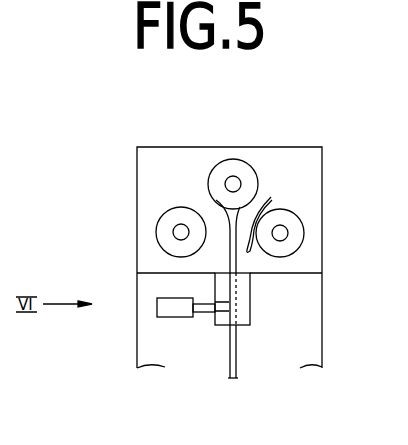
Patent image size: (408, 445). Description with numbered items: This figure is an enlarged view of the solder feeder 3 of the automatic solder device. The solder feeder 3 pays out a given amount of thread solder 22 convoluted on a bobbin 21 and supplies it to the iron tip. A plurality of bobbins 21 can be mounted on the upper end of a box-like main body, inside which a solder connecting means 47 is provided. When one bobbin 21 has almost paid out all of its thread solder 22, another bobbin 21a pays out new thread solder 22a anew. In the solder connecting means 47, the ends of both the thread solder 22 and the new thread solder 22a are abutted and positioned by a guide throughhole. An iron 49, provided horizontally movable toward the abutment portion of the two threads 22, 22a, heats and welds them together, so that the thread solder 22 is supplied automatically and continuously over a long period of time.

The solder feeder 3 is at (283, 147).
The bobbin 21 is at (209, 174).
The bobbin 21a is at (304, 233).
The thread solder 22 is at (237, 350).
The thread solder 22a is at (274, 213).
The solder connecting means 47 is at (250, 300).
The iron 49 is at (208, 313).